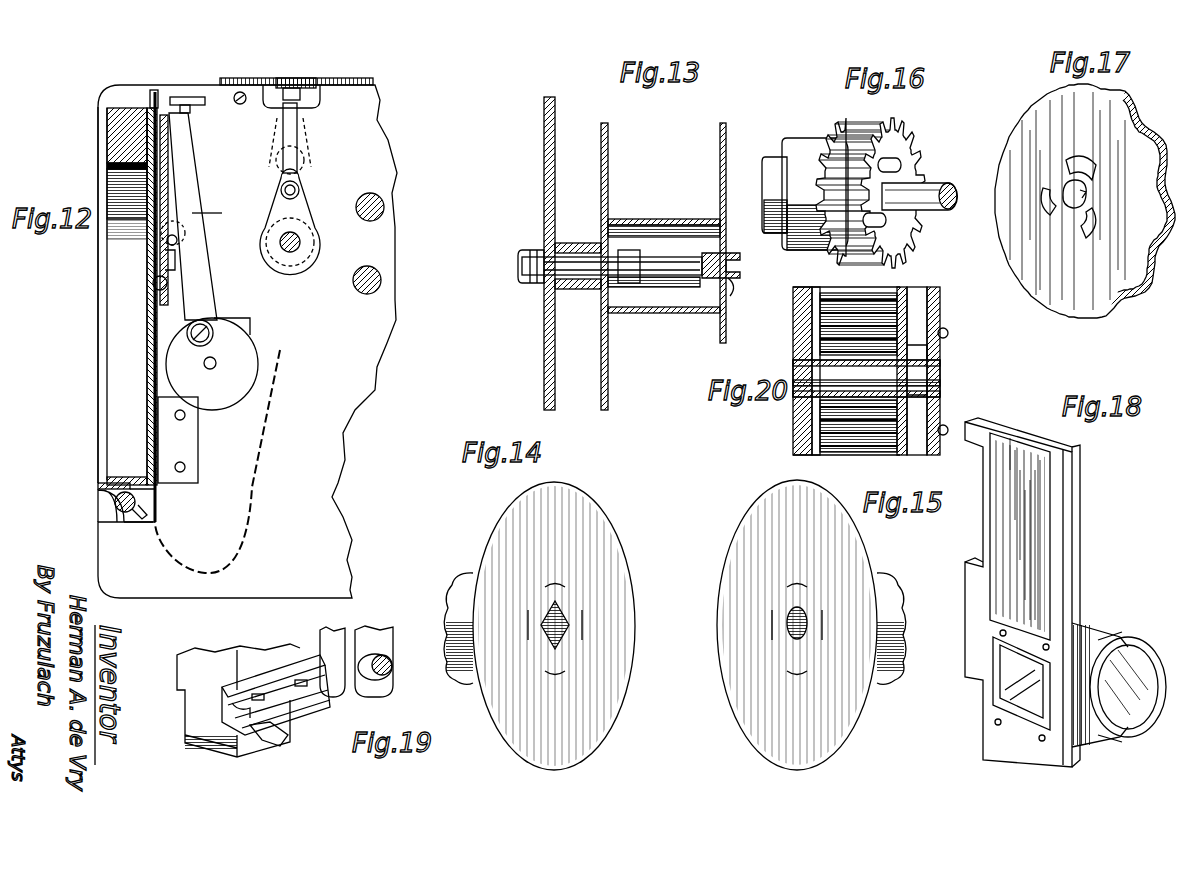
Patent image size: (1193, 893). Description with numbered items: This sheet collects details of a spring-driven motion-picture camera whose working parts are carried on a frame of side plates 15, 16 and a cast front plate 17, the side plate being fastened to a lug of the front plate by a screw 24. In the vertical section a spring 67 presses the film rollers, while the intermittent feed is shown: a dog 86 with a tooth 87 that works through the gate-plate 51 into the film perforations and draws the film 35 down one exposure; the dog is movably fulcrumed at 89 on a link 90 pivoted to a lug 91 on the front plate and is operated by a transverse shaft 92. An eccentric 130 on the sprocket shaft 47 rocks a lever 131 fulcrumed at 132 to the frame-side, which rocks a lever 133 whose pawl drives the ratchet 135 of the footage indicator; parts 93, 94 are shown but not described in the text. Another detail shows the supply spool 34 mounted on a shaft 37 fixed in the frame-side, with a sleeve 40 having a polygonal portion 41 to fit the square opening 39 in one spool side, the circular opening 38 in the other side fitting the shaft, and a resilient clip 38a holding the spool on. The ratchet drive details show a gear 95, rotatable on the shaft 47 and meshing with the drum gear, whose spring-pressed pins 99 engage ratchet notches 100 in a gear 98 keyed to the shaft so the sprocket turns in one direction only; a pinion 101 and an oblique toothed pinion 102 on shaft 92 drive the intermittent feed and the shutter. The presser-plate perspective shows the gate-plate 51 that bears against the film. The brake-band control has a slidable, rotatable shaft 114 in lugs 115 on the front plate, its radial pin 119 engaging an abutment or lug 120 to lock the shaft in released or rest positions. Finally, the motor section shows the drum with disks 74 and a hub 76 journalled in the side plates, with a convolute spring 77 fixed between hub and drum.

In FIG. 12, the side plate 15 is at (383, 122).
In FIG. 13, the side plate 15 is at (544, 220).
In FIG. 20, the side plate 15 is at (940, 302).
In FIG. 20, the side plate 16 is at (793, 440).
In FIG. 12, the front plate 17 is at (147, 438).
In FIG. 12, the screw 24 is at (185, 465).
In FIG. 13, the supply spool 34 is at (608, 137).
In FIG. 14, the supply spool 34 is at (620, 573).
In FIG. 15, the supply spool 34 is at (860, 555).
In FIG. 12, the film 35 is at (270, 410).
In FIG. 13, the shaft 37 is at (660, 250).
In FIG. 15, the circular opening 38 is at (800, 640).
In FIG. 13, the resilient strip or clip 38a is at (728, 278).
In FIG. 14, the polygonal opening 39 is at (563, 640).
In FIG. 13, the sleeve 40 is at (586, 290).
In FIG. 13, the polygonal portion 41 is at (630, 250).
In FIG. 12, the shaft 47 is at (302, 242).
In FIG. 16, the shaft 47 is at (950, 188).
In FIG. 18, the gate-plate 51 is at (1070, 530).
In FIG. 12, the spring 67 is at (128, 112).
In FIG. 20, the disks or sides 74 is at (948, 333).
In FIG. 20, the hub 76 is at (945, 364).
In FIG. 20, the convolute spring 77 is at (890, 300).
In FIG. 12, the dog 86 is at (203, 286).
In FIG. 12, the tooth 87 is at (172, 150).
In FIG. 12, the fulcrum 89 is at (178, 239).
In FIG. 12, the link 90 is at (180, 262).
In FIG. 12, the lug 91 is at (153, 283).
In FIG. 12, the transverse shaft 92 is at (216, 360).
In FIG. 12, the pivot screw 93 is at (214, 333).
In FIG. 12, the disk 94 is at (212, 364).
In FIG. 16, the gear 95 is at (809, 176).
In FIG. 17, the gear 98 is at (1140, 290).
In FIG. 16, the spring-pressed pins 99 is at (903, 160).
In FIG. 17, the ratchet notches 100 is at (1086, 166).
In FIG. 18, the ratchet notches 100 is at (1020, 692).
In FIG. 12, the pinion 101 is at (100, 322).
In FIG. 18, the pinion 101 is at (1085, 632).
In FIG. 18, the oblique toothed pinion 102 is at (1140, 645).
In FIG. 12, the shaft 114 is at (125, 512).
In FIG. 19, the shaft 114 is at (290, 712).
In FIG. 19, the lugs 115 is at (222, 735).
In FIG. 12, the radial pin 119 is at (148, 511).
In FIG. 19, the radial pin 119 is at (268, 743).
In FIG. 12, the abutment or lug 120 is at (100, 494).
In FIG. 19, the abutment or lug 120 is at (316, 755).
In FIG. 12, the eccentric 130 is at (290, 88).
In FIG. 12, the lever 131 is at (308, 205).
In FIG. 12, the fulcrum 132 is at (300, 187).
In FIG. 12, the lever 133 is at (340, 78).
In FIG. 12, the ratchet 135 is at (278, 80).